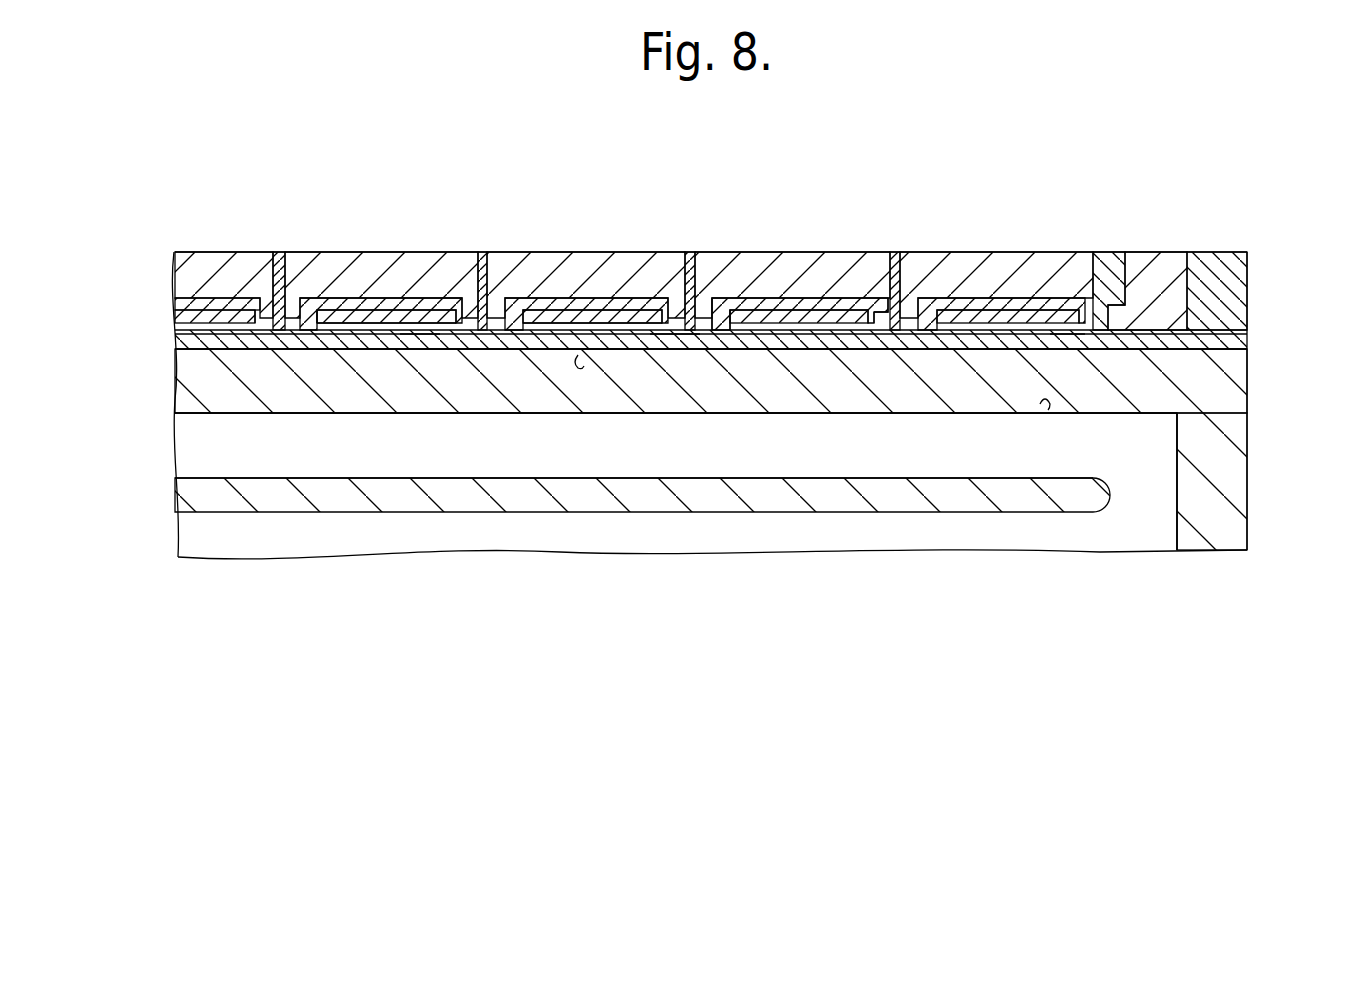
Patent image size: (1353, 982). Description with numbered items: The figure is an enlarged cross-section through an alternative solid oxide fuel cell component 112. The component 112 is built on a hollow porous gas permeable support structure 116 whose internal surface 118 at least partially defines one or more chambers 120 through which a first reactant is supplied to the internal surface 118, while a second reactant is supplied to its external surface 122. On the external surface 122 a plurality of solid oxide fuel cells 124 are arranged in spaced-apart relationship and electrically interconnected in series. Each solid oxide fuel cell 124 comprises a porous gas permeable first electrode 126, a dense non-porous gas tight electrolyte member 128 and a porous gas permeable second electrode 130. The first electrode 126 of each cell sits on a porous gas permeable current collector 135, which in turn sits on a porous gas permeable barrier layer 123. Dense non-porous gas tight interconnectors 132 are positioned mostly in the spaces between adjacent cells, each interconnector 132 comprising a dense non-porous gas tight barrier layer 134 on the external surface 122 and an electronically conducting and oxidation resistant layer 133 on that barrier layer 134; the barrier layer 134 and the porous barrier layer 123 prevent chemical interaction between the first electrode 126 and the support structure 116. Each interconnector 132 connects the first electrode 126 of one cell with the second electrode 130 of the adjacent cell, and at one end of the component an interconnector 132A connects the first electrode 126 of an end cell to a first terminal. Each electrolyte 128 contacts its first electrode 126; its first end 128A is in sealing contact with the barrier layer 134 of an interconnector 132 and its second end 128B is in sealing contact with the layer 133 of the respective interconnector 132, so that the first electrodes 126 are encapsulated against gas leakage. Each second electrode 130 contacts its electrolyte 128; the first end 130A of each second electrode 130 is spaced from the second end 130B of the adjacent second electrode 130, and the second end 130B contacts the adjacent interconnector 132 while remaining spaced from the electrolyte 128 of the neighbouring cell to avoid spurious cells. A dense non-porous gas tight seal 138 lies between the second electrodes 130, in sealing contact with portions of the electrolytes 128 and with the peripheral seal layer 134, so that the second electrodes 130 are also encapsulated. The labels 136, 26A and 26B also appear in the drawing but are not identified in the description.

The solid oxide fuel cell component 112 is at (1085, 188).
The hollow porous gas permeable support structure 116 is at (1013, 378).
The internal surface 118 is at (1046, 408).
The chambers 120 is at (887, 466).
The external surface 122 is at (578, 355).
The porous gas permeable barrier layer 123 is at (420, 334).
The solid oxide fuel cell 124 is at (316, 240).
The porous gas permeable first electrode 126 is at (350, 318).
The dense non-porous gas tight electrolyte member 128 is at (333, 317).
The first end of electrolyte 128A is at (317, 317).
The second end of electrolyte 128B is at (262, 298).
The porous gas permeable second electrode 130 is at (370, 298).
The first end of second electrode 130A is at (885, 318).
The second end of second electrode 130B is at (735, 328).
The dense non-porous gas tight interconnector 132 is at (266, 352).
The dense non-porous gas tight interconnector 132A is at (1100, 343).
The electronically conducting and oxidation resistant layer 133 is at (450, 328).
The dense non-porous gas tight barrier layer 134 is at (265, 348).
The porous gas permeable current collector 135 is at (178, 330).
The top layer 136 is at (1175, 268).
The dense non-porous gas tight seal 138 is at (280, 252).
The layer portion A 26A is at (858, 318).
The layer portion B 26B is at (800, 322).